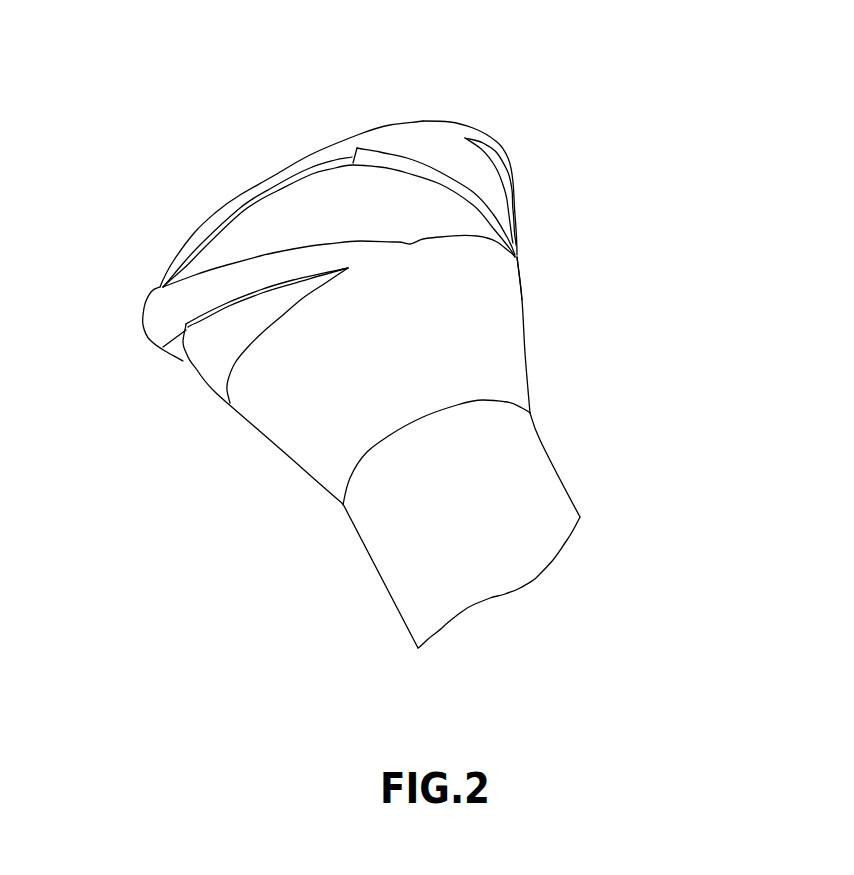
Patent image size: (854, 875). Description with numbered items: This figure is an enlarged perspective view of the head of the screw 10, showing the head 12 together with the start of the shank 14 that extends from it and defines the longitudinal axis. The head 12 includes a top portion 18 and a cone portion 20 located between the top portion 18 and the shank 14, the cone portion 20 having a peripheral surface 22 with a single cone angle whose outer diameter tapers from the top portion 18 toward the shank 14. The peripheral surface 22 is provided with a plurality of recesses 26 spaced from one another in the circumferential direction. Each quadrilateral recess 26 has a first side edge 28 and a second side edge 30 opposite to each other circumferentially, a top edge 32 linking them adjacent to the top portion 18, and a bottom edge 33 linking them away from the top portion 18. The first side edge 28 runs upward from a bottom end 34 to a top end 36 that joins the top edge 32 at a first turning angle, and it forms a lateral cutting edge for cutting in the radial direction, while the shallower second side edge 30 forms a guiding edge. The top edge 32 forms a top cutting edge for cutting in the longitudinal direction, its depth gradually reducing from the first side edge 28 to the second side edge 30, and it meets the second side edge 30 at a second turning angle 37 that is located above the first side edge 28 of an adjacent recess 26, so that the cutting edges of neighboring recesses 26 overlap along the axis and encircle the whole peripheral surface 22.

The screw 10 is at (293, 606).
The head 12 is at (582, 308).
The shank 14 is at (533, 467).
The top portion 18 is at (287, 210).
The cone portion 20 is at (273, 432).
The peripheral surface 22 is at (480, 172).
The recess 26 is at (272, 177).
The first side edge 28 is at (443, 172).
The second side edge 30 is at (217, 264).
The top edge 32 is at (233, 212).
The bottom edge 33 is at (442, 242).
The bottom end 34 is at (517, 257).
The top end 36 is at (357, 149).
The second turning angle 37 is at (162, 287).